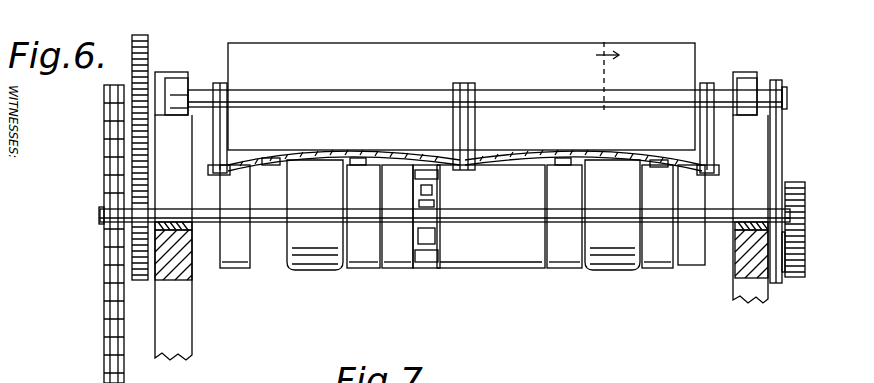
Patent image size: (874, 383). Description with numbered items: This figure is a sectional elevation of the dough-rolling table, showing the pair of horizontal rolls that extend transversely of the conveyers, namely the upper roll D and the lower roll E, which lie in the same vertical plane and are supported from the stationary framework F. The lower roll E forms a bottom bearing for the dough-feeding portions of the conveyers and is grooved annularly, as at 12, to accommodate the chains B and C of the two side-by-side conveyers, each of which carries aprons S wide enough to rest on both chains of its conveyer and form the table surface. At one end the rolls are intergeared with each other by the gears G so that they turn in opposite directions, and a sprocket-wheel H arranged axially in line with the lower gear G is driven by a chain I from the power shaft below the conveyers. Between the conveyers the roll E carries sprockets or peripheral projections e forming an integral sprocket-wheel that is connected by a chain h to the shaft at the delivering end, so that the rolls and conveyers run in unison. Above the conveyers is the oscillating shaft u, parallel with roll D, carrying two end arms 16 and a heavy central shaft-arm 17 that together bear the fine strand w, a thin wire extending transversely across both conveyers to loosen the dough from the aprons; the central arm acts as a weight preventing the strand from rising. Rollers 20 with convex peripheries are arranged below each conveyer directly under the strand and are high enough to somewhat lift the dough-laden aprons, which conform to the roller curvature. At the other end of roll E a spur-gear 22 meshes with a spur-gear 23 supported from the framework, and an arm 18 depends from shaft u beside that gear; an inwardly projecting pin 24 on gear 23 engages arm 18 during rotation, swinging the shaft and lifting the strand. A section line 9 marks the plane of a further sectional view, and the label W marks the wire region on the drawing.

The upper roll D is at (402, 43).
The oscillating shaft u is at (521, 97).
The section line 9 9 is at (612, 280).
The arms 16 is at (213, 140).
The central shaft-arm 17 is at (475, 128).
The wire rail W is at (309, 156).
The strand w is at (422, 161).
The lower roll E is at (488, 268).
The annular grooves 12 is at (265, 270).
The conveyer chains B is at (270, 170).
The conveyer chains C is at (650, 170).
The rollers 20 is at (318, 272).
The sprockets or peripheral projections e is at (430, 190).
The chain h is at (419, 270).
The aprons S is at (540, 163).
The stationary framework F is at (192, 358).
The gears G is at (148, 157).
The sprocket-wheel H is at (104, 283).
The chain I is at (108, 364).
The arm 18 is at (776, 284).
The spur-gear 22 is at (805, 194).
The spur-gear 23 is at (808, 275).
The pin 24 is at (781, 284).